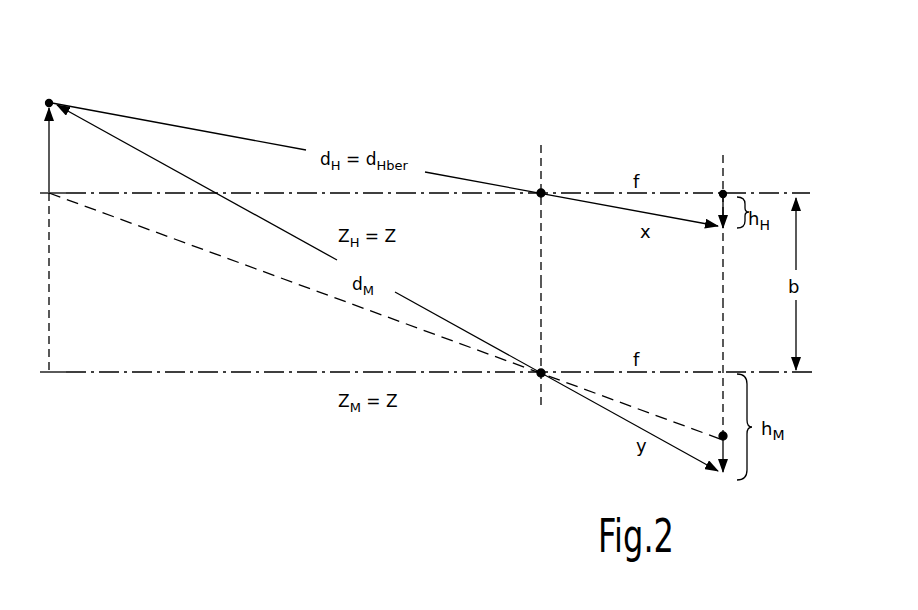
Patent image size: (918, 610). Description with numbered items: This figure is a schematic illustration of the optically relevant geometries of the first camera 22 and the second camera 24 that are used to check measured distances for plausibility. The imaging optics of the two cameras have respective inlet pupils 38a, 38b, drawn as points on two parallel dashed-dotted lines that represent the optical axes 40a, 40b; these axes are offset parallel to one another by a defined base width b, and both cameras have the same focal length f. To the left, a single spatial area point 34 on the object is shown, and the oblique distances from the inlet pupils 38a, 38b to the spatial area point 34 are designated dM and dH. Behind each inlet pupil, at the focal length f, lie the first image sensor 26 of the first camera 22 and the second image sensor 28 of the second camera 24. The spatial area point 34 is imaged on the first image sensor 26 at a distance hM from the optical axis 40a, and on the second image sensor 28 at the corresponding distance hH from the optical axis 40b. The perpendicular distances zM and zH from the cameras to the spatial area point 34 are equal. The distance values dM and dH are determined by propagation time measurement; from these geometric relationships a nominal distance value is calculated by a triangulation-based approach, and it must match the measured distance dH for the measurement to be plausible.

The first camera 22 is at (591, 431).
The second camera 24 is at (612, 155).
The first image sensor 26 is at (765, 360).
The second image sensor 28 is at (765, 182).
The spatial area point 34 is at (49, 100).
The inlet pupil 38a is at (539, 376).
The inlet pupil 38b is at (540, 191).
The optical axis 40a is at (232, 373).
The optical axis 40b is at (270, 192).